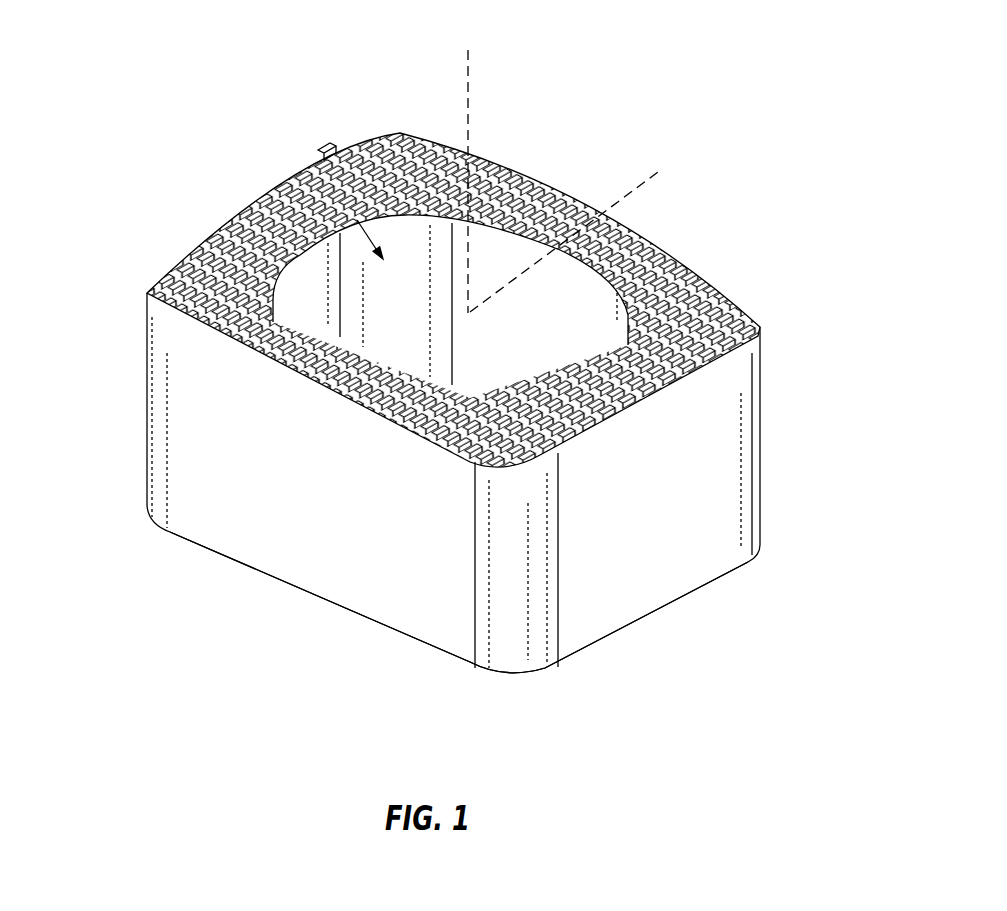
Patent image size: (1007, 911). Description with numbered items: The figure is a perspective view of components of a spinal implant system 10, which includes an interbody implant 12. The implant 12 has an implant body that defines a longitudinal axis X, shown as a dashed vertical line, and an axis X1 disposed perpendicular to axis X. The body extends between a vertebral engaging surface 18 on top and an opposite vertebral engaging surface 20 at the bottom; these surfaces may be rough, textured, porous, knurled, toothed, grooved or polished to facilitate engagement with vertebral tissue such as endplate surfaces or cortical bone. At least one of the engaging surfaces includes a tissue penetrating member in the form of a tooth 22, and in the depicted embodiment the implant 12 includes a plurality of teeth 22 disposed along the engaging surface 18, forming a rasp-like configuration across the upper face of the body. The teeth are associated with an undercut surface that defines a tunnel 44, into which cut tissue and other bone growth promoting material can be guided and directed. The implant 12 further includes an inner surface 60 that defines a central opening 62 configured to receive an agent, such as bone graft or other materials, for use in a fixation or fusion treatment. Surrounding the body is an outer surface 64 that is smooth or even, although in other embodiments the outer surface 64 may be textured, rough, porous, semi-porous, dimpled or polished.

The spinal implant system 10 is at (118, 126).
The interbody implant 12 is at (737, 463).
The vertebral engaging surface 18 is at (687, 242).
The vertebral engaging surface 20 is at (643, 623).
The tooth 22 is at (440, 442).
The tunnel 44 is at (407, 427).
The inner surface 60 is at (313, 277).
The opening 62 is at (322, 157).
The outer surface 64 is at (210, 475).
The longitudinal axis X is at (471, 166).
The axis X1 is at (585, 230).